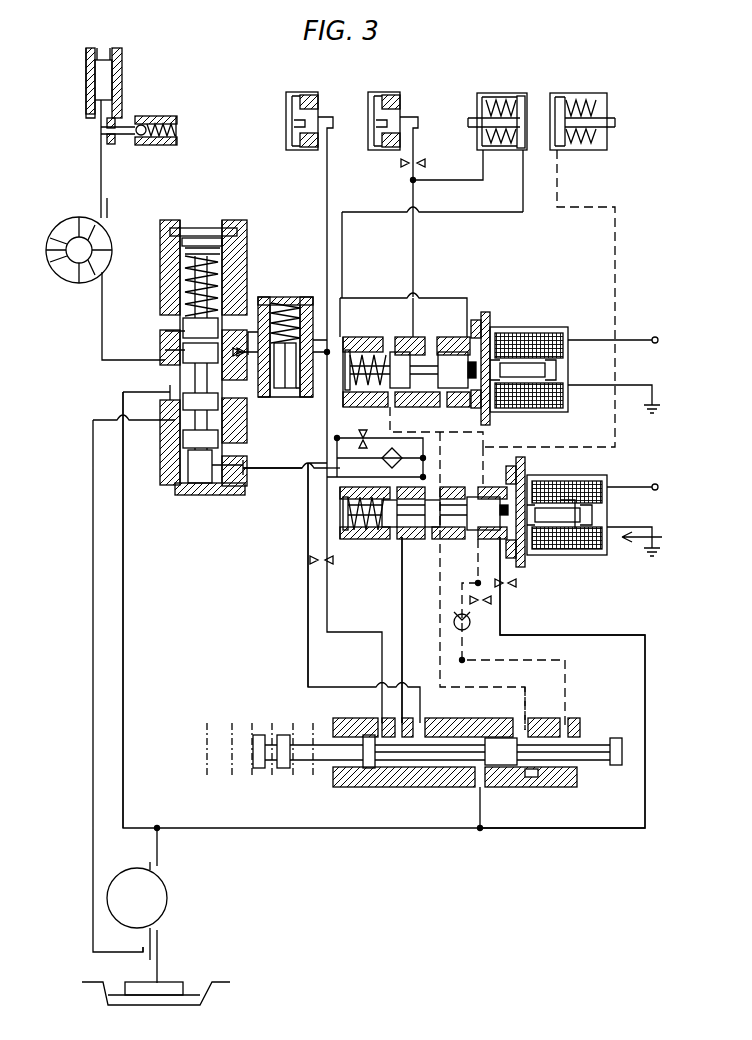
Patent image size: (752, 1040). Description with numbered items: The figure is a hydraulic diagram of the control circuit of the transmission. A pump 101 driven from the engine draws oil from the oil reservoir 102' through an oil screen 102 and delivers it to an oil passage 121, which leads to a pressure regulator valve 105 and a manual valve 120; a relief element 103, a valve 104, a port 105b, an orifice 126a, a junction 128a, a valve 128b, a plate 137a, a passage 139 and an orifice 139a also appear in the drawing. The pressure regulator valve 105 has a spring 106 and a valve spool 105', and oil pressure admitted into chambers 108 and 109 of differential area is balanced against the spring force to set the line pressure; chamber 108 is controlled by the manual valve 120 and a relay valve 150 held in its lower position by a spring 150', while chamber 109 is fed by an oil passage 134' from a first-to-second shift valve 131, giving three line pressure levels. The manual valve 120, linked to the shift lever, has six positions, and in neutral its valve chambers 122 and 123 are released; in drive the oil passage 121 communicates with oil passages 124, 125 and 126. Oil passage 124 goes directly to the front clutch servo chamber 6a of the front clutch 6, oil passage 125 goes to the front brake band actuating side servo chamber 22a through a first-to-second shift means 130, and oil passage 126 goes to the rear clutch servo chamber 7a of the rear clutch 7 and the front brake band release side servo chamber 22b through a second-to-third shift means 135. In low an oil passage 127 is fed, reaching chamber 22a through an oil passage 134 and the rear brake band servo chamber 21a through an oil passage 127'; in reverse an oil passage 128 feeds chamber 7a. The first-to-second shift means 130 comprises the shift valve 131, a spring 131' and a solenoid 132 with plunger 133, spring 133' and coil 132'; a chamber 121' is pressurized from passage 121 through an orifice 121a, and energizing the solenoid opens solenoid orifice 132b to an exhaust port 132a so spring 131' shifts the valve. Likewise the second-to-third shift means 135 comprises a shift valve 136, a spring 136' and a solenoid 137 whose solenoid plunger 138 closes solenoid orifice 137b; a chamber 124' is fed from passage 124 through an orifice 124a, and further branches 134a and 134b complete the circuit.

The front clutch 6 is at (296, 88).
The front clutch servo chamber 6a is at (322, 92).
The rear clutch 7 is at (380, 90).
The rear clutch servo chamber 7a is at (404, 100).
The rear brake band servo chamber 21a is at (560, 90).
The front brake band actuating side servo chamber 22a is at (525, 100).
The front brake band release side servo chamber 22b is at (496, 90).
The pump 101 is at (163, 885).
The oil screen 102 is at (171, 966).
The oil reservoir 102' is at (178, 996).
The relief valve 103 is at (150, 112).
The pressure regulator valve 104 is at (112, 73).
The pressure regulator valve 105 is at (203, 339).
The valve spool 105' is at (168, 287).
The regulator valve port 105b is at (160, 385).
The spring 106 is at (222, 250).
The chamber 108 is at (168, 334).
The chamber 109 is at (185, 470).
The manual valve 120 is at (320, 770).
The oil passage 121 is at (384, 610).
The chamber 121' is at (505, 467).
The orifice 121a is at (505, 590).
The valve chamber 122 is at (430, 770).
The valve chamber 123 is at (533, 782).
The oil passage 124 is at (367, 456).
The chamber 124' is at (436, 423).
The orifice 124a is at (342, 275).
The oil passage 125 is at (402, 660).
The oil passage 126 is at (380, 655).
The orifice 126a is at (308, 555).
The oil passage 127 is at (500, 708).
The oil passage 127' is at (573, 298).
The oil passage 128 is at (572, 683).
The oil passage junction 128a is at (485, 625).
The relief valve 128b is at (450, 620).
The 1-2 shift means 130 is at (661, 533).
The 1-2 shift valve 131 is at (424, 540).
The spring 131' is at (366, 534).
The 1-2 solenoid 132 is at (586, 527).
The coil 132' is at (624, 466).
The exhaust port 132a is at (540, 477).
The solenoid orifice 132b is at (522, 567).
The plunger 133 is at (614, 563).
The spring 133' is at (607, 508).
The oil passage 134 is at (367, 284).
The oil passage 134' is at (263, 496).
The oil passage 134a is at (330, 432).
The oil passage 134b is at (345, 472).
The 2-3 shift means 135 is at (585, 400).
The 2-3 shift valve 136 is at (409, 359).
The spring 136' is at (373, 352).
The 2-3 solenoid 137 is at (540, 336).
The solenoid armature plate 137a is at (485, 312).
The solenoid orifice 137b is at (485, 425).
The solenoid plunger 138 is at (520, 345).
The oil passage 139 is at (413, 263).
The orifice 139a is at (400, 165).
The relay valve 150 is at (281, 361).
The spring 150' is at (274, 325).